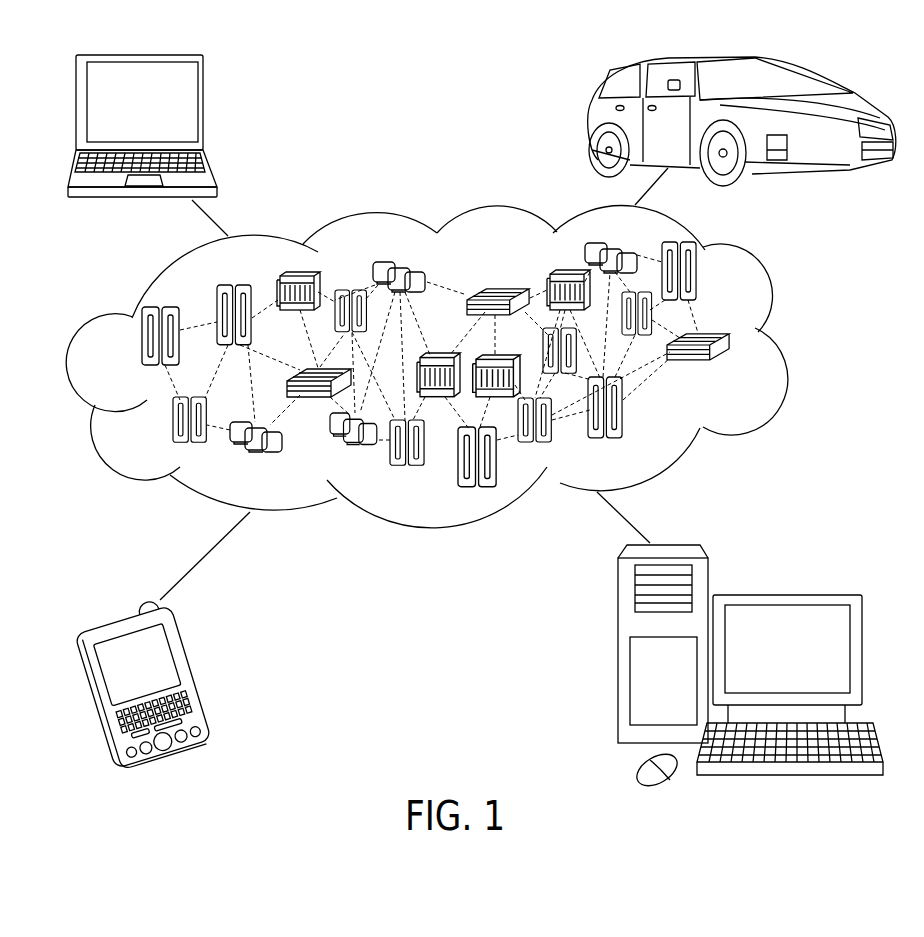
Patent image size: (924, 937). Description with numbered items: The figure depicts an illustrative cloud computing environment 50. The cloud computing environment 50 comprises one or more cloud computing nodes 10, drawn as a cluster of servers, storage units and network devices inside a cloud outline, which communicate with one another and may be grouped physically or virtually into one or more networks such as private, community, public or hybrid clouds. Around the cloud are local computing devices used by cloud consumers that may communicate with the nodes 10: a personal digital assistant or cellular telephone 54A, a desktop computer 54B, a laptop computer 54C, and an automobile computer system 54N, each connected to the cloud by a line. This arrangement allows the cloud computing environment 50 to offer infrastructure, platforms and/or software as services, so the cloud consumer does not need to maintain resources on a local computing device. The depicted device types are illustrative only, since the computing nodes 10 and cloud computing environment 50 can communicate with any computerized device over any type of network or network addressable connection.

The cloud computing nodes 10 is at (733, 367).
The cloud computing environment 50 is at (786, 350).
The personal digital assistant (PDA) or cellular telephone 54A is at (198, 677).
The desktop computer 54B is at (782, 593).
The laptop computer 54C is at (206, 108).
The automobile computer system 54N is at (590, 122).